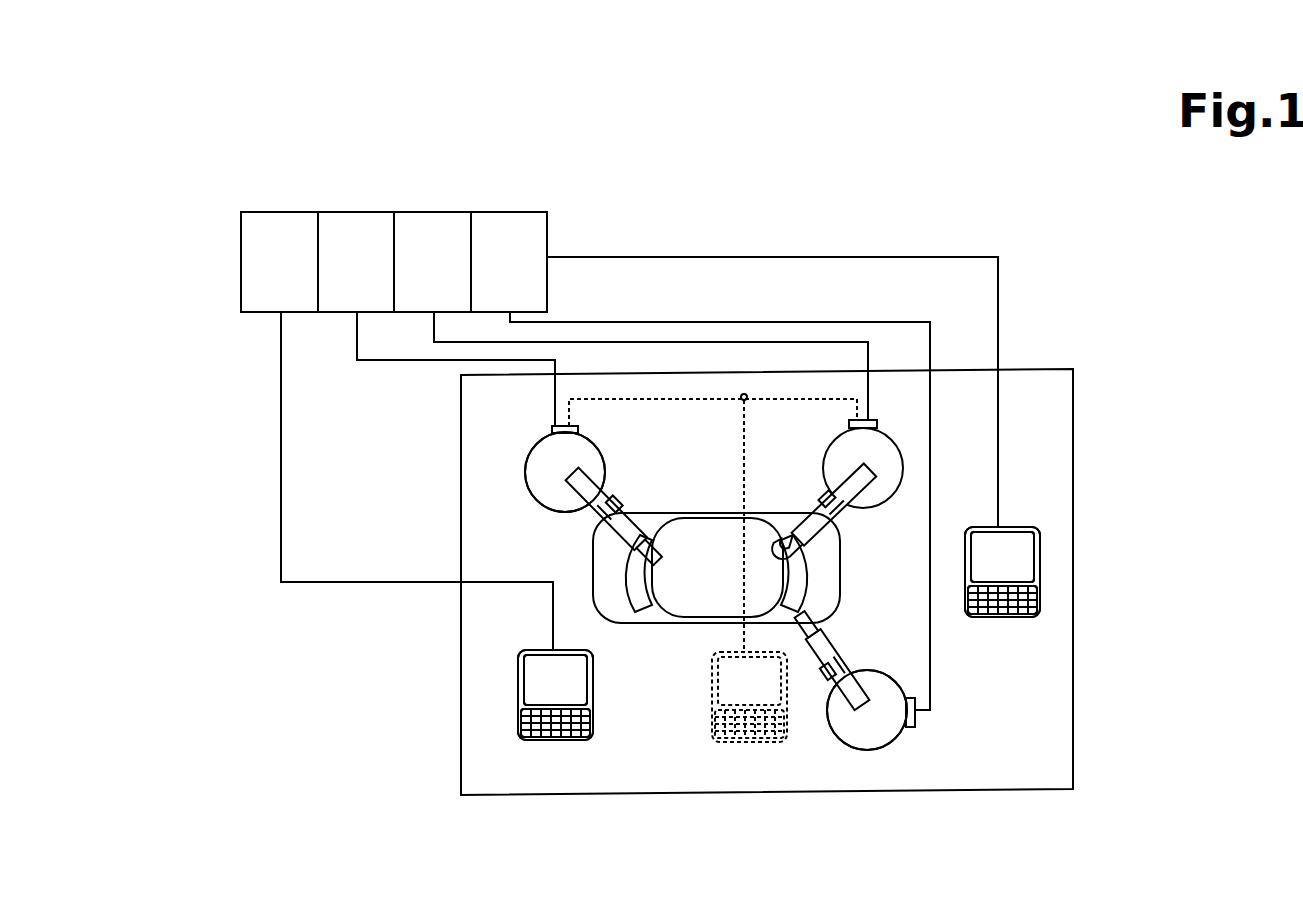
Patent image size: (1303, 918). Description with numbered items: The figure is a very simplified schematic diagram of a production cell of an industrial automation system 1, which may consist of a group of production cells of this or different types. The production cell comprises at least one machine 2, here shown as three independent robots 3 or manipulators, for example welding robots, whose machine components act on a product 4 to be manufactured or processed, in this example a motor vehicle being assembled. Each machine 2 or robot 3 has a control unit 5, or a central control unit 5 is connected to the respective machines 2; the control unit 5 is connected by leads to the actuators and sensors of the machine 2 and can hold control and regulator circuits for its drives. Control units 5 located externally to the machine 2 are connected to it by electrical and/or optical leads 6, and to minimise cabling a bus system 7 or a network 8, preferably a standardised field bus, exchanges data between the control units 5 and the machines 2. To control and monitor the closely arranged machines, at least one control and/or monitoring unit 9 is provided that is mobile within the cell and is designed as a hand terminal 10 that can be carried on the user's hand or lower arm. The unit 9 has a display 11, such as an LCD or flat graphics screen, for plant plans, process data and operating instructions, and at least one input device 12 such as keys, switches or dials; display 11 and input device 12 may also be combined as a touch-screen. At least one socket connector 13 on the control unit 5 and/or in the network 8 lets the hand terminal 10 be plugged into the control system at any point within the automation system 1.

The automation system 1 is at (1052, 288).
The machine 2 is at (907, 433).
The robot 3 is at (578, 455).
The product 4 is at (650, 635).
The control unit 5 is at (395, 163).
The leads 6 is at (680, 257).
The bus system 7 is at (900, 183).
The network 8 is at (950, 198).
The control and/or monitoring unit 9 is at (515, 752).
The hand terminal 10 is at (520, 700).
The display 11 is at (542, 673).
The input device 12 is at (518, 720).
The socket connector 13 is at (733, 390).